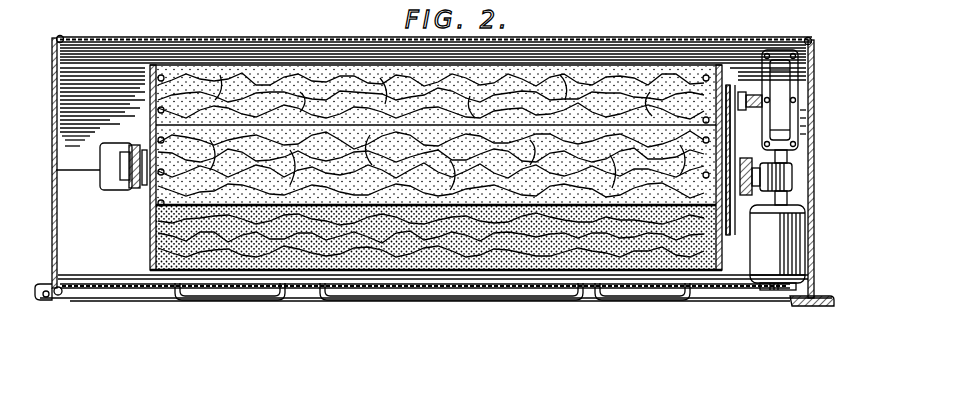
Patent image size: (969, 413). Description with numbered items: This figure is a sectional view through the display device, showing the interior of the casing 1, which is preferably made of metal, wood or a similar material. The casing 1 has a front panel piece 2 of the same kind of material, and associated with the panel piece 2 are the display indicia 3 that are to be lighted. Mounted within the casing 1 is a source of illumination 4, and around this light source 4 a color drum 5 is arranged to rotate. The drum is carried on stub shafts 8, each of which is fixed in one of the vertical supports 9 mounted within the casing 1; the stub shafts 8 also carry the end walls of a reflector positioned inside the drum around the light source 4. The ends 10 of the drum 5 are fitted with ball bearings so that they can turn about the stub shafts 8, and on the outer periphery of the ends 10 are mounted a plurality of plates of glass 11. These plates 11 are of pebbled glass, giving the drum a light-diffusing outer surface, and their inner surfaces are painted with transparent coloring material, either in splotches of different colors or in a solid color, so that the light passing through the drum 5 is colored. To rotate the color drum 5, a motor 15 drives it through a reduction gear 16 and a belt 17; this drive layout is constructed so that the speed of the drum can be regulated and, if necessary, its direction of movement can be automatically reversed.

The casing 1 is at (125, 22).
The front panel piece 2 is at (112, 288).
The display indicia 3 is at (200, 305).
The source of illumination 4 is at (57, 200).
The color drum 5 is at (268, 68).
The stub shaft 8 is at (122, 172).
The vertical supports 9 is at (140, 172).
The ends of the drum 10 is at (150, 255).
The plates of glass 11 is at (520, 133).
The motor 15 is at (792, 258).
The reduction gear 16 is at (782, 100).
The belt 17 is at (728, 90).